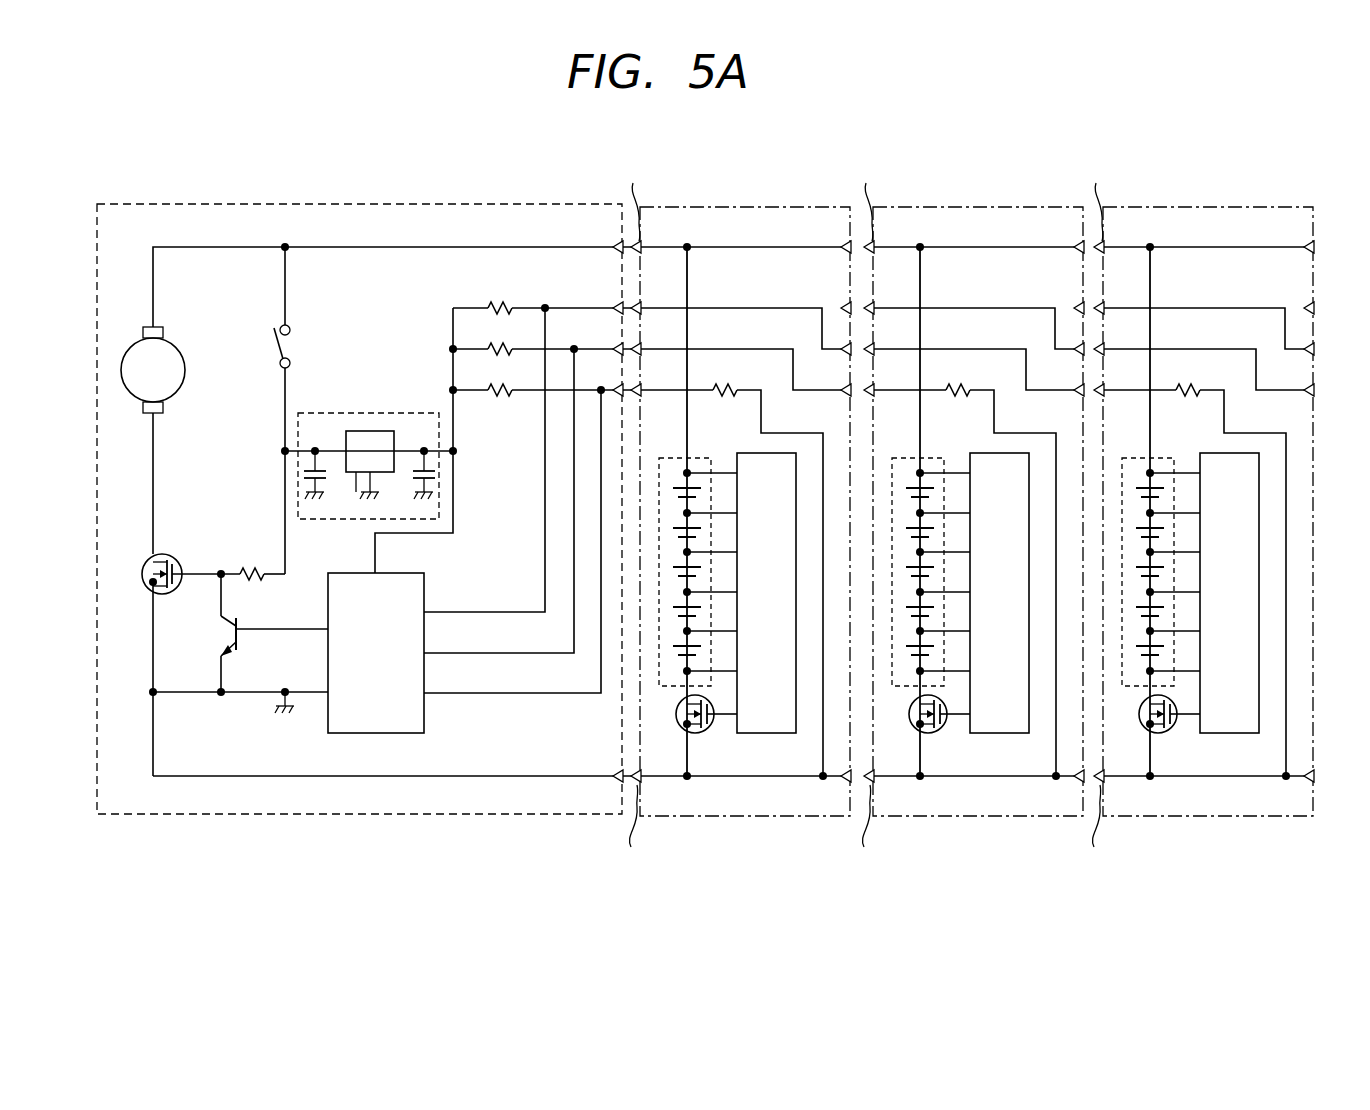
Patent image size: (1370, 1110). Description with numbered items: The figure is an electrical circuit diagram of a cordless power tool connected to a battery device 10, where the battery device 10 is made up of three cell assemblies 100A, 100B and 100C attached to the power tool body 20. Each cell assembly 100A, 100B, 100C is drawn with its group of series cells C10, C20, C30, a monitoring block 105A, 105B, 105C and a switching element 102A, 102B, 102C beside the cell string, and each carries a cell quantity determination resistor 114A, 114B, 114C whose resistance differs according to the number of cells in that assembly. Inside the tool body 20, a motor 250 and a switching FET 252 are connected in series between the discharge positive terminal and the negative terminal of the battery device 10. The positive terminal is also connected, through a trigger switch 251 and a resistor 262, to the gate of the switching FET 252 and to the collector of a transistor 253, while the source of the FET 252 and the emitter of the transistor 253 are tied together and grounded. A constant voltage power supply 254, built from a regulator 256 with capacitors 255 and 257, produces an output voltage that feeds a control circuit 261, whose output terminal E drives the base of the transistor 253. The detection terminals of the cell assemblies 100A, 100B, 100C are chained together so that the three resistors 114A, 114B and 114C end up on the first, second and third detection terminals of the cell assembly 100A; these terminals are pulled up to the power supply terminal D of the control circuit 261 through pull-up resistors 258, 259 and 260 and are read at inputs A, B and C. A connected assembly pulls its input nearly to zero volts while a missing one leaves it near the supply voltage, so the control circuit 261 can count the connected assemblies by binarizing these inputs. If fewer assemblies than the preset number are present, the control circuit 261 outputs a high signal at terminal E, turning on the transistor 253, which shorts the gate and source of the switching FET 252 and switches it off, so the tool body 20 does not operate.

The battery device 10 is at (770, 186).
The power tool body 20 is at (385, 815).
The cell assembly 100A is at (782, 817).
The cell assembly 100B is at (966, 515).
The cell assembly 100C is at (1196, 515).
The discharge switching element (FET) of module A 102A is at (709, 731).
The discharge switching element (FET) of module B 102B is at (943, 752).
The discharge switching element (FET) of module C 102C is at (1173, 752).
The battery monitoring circuit of module A 105A is at (776, 452).
The battery monitoring circuit of module B 105B is at (1014, 567).
The battery monitoring circuit of module C 105C is at (1244, 567).
The resistor for determining a number of cells 114A is at (722, 384).
The resistor for determining a number of cells 114B is at (960, 358).
The resistor for determining a number of cells 114C is at (1190, 358).
The battery cell group of module A C10 is at (699, 458).
The battery cell group of module B C20 is at (932, 549).
The battery cell group of module C C30 is at (1162, 549).
The motor 250 is at (178, 346).
The trigger switch 251 is at (298, 342).
The switching FET 252 is at (175, 553).
The transistor 253 is at (232, 633).
The constant voltage power supply 254 is at (384, 413).
The capacitor 255 is at (306, 474).
The regulator 256 is at (356, 492).
The capacitor 257 is at (432, 474).
The pull-up resistor 258 is at (506, 395).
The pull-up resistor 259 is at (494, 343).
The pull-up resistor 260 is at (501, 303).
The control circuit 261 is at (420, 708).
The resistor 262 is at (254, 580).